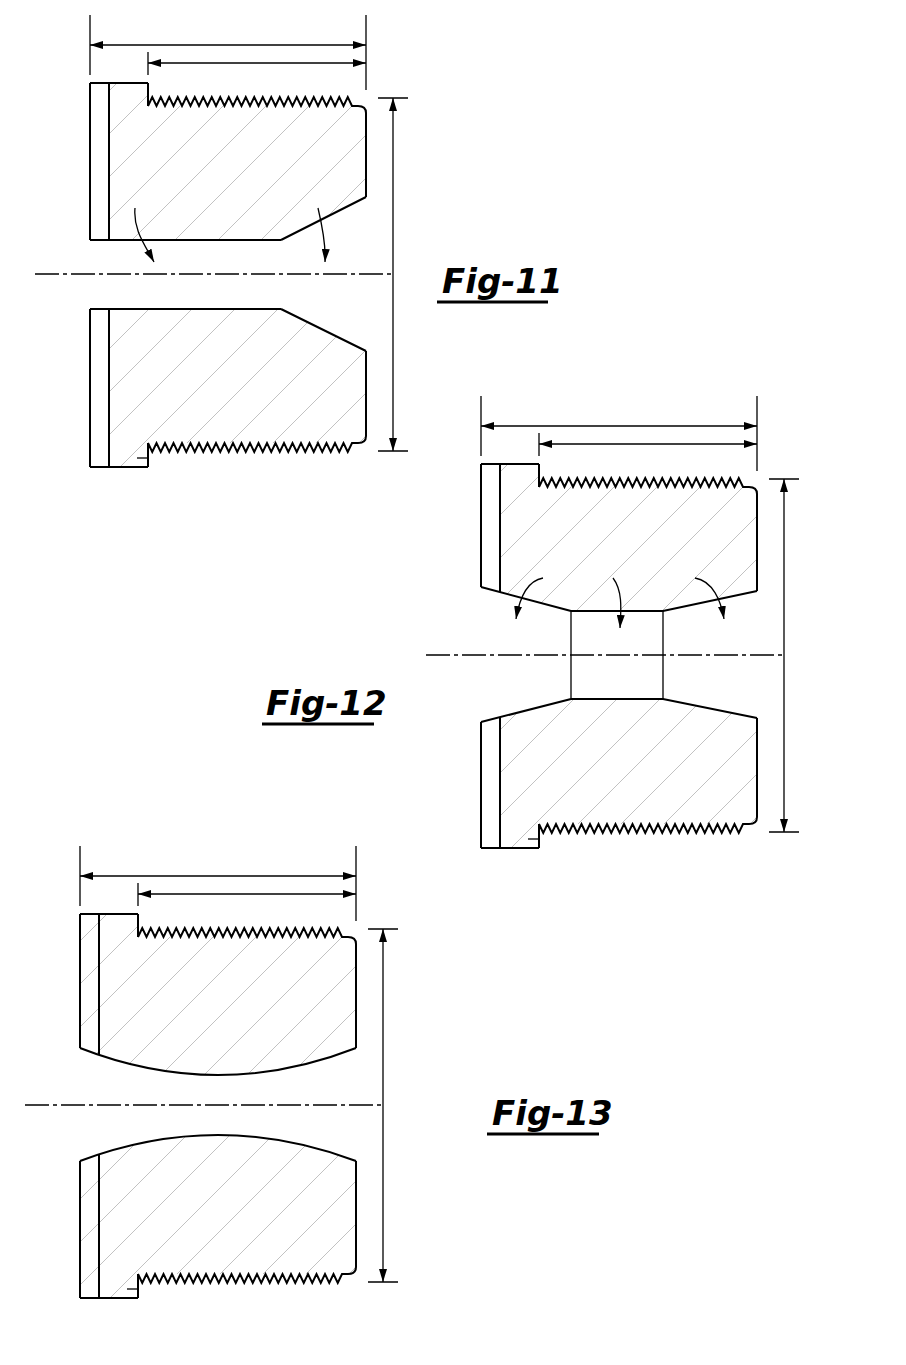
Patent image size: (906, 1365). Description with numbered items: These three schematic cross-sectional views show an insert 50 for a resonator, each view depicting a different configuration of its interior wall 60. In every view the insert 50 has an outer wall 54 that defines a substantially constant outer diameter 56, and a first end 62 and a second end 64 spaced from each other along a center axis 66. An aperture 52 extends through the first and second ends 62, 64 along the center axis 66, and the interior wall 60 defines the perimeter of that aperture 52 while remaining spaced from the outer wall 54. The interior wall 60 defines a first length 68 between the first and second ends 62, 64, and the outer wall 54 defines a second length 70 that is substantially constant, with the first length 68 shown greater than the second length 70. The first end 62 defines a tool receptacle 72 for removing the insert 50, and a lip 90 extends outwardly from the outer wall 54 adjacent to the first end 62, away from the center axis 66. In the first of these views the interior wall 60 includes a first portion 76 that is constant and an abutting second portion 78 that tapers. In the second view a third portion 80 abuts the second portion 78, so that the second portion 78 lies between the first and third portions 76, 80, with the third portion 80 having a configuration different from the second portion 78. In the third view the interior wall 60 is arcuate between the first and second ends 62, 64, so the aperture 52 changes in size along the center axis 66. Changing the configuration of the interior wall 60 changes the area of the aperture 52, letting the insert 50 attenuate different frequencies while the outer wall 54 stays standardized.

In FIG. 11, the insert 50 is at (443, 95).
In FIG. 12, the insert 50 is at (453, 681).
In FIG. 13, the insert 50 is at (417, 1098).
In FIG. 11, the aperture 52 is at (108, 255).
In FIG. 12, the aperture 52 is at (494, 654).
In FIG. 13, the aperture 52 is at (117, 1104).
In FIG. 11, the outer wall 54 is at (257, 448).
In FIG. 12, the outer wall 54 is at (648, 680).
In FIG. 13, the outer wall 54 is at (247, 1130).
In FIG. 11, the outer diameter 56 is at (393, 152).
In FIG. 12, the outer diameter 56 is at (800, 655).
In FIG. 13, the outer diameter 56 is at (399, 1105).
In FIG. 11, the interior wall 60 is at (187, 299).
In FIG. 12, the interior wall 60 is at (664, 661).
In FIG. 13, the interior wall 60 is at (287, 1130).
In FIG. 11, the first end 62 is at (90, 183).
In FIG. 12, the first end 62 is at (453, 656).
In FIG. 13, the first end 62 is at (52, 1106).
In FIG. 11, the second end 64 is at (364, 178).
In FIG. 12, the second end 64 is at (769, 655).
In FIG. 13, the second end 64 is at (368, 1105).
In FIG. 11, the center axis 66 is at (47, 283).
In FIG. 12, the center axis 66 is at (604, 692).
In FIG. 13, the center axis 66 is at (203, 1142).
In FIG. 11, the first length 68 is at (184, 44).
In FIG. 12, the first length 68 is at (619, 431).
In FIG. 13, the first length 68 is at (218, 881).
In FIG. 11, the second length 70 is at (224, 64).
In FIG. 12, the second length 70 is at (648, 482).
In FIG. 13, the second length 70 is at (247, 932).
In FIG. 11, the tool receptacle 72 is at (98, 143).
In FIG. 12, the tool receptacle 72 is at (481, 656).
In FIG. 13, the tool receptacle 72 is at (80, 1106).
In FIG. 11, the first portion 76 is at (142, 225).
In FIG. 12, the first portion 76 is at (542, 591).
In FIG. 11, the second portion 78 is at (315, 225).
In FIG. 12, the second portion 78 is at (611, 595).
In FIG. 12, the third portion 80 is at (701, 591).
In FIG. 11, the lip 90 is at (148, 458).
In FIG. 12, the lip 90 is at (572, 864).
In FIG. 13, the lip 90 is at (171, 1314).